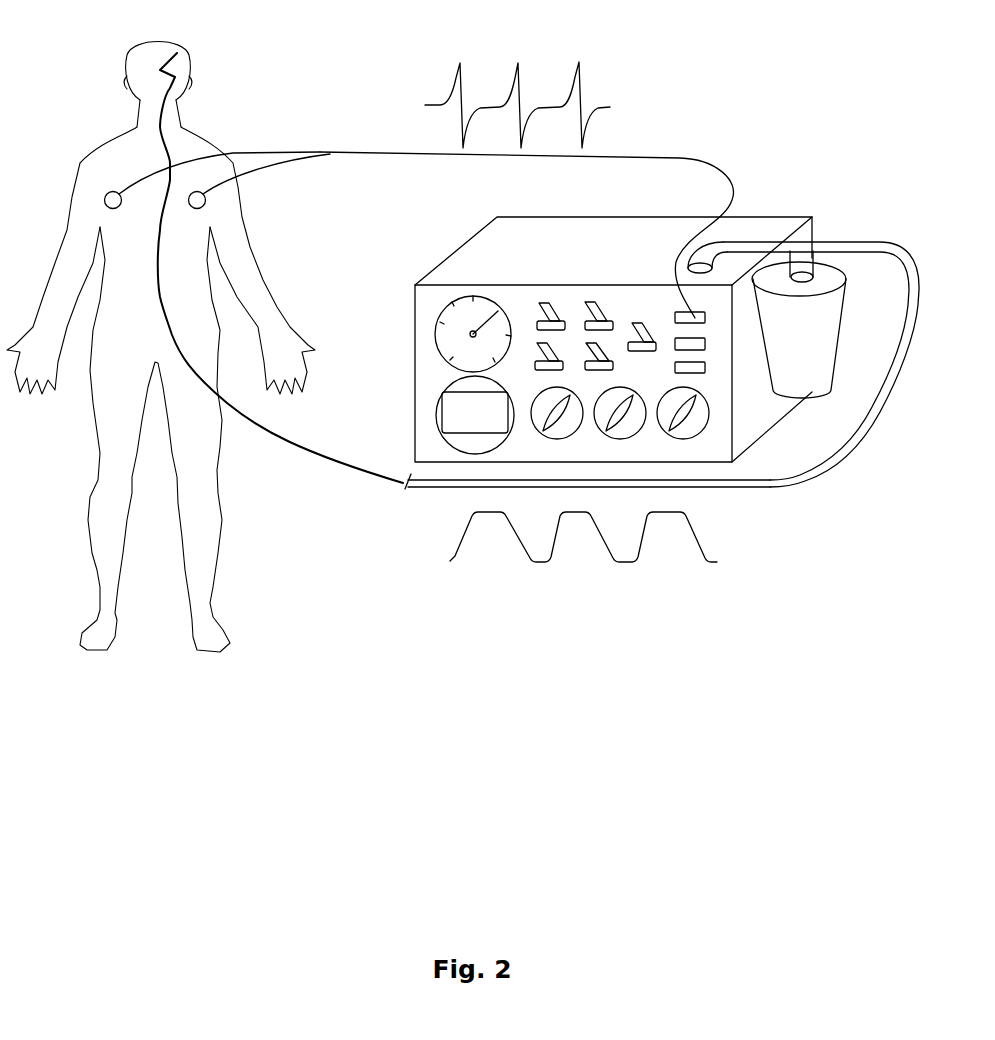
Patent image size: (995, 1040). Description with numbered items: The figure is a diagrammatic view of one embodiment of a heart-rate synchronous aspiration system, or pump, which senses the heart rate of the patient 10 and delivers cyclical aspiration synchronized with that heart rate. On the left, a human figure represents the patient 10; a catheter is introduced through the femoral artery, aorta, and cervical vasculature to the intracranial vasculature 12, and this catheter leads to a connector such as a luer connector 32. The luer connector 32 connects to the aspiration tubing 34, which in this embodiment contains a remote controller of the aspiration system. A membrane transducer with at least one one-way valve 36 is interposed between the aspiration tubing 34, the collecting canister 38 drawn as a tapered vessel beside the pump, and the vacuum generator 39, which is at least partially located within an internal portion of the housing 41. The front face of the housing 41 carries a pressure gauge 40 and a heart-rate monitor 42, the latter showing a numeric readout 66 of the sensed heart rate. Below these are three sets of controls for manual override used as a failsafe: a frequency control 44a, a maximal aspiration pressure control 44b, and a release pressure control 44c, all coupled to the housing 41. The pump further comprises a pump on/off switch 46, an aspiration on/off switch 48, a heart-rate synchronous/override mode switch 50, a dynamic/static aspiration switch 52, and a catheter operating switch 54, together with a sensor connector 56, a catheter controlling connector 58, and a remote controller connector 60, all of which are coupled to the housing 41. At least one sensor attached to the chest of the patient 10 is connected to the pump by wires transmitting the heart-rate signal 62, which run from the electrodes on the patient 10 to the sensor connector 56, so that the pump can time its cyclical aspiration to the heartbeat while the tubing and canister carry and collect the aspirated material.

The patient 10 is at (161, 347).
The intracranial vasculature 12 is at (280, 268).
The luer connector 32 is at (400, 493).
The aspiration tubing 34 is at (602, 493).
The membrane transducer with at least one one-way valve 36 is at (812, 238).
The collecting canister 38 is at (799, 324).
The vacuum generator 39 is at (590, 247).
The pressure gauge 40 is at (466, 334).
The housing 41 is at (756, 217).
The heart-rate monitor 42 is at (467, 415).
The frequency control 44a is at (557, 422).
The maximal aspiration pressure control 44b is at (620, 422).
The release pressure control 44c is at (683, 422).
The pump on/off switch 46 is at (642, 329).
The aspiration on/off switch 48 is at (591, 312).
The heart-rate synchronous/override mode switch 50 is at (542, 312).
The dynamic/static aspiration switch 52 is at (591, 352).
The catheter operating switch 54 is at (541, 351).
The sensor connector 56 is at (694, 310).
The catheter controlling connector 58 is at (701, 347).
The remote controller connector 60 is at (701, 371).
The wires transmitting heart-rate signal 62 is at (419, 235).
The displayed value 66 is at (473, 415).